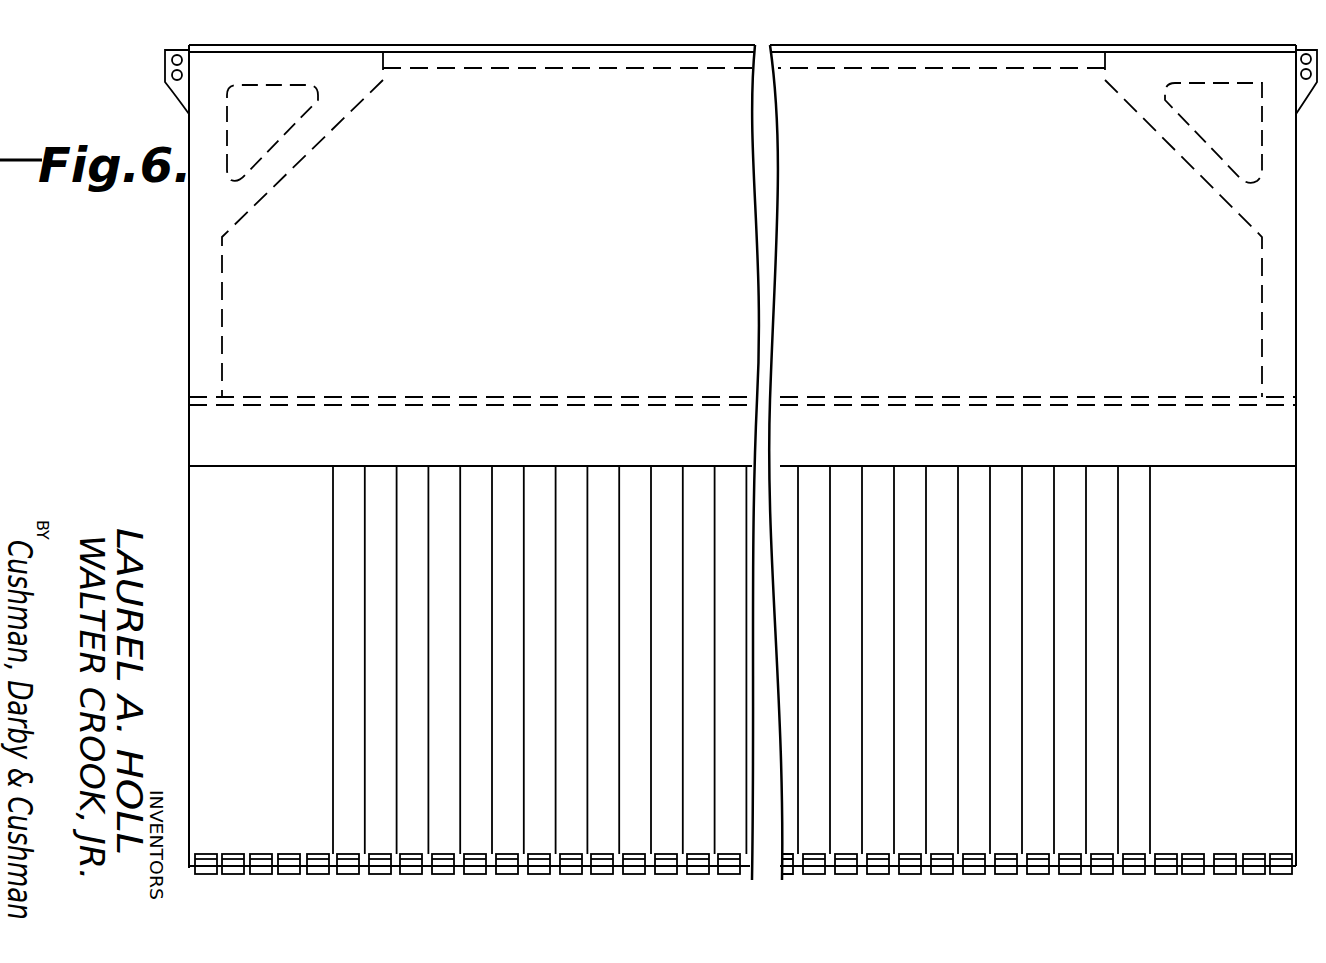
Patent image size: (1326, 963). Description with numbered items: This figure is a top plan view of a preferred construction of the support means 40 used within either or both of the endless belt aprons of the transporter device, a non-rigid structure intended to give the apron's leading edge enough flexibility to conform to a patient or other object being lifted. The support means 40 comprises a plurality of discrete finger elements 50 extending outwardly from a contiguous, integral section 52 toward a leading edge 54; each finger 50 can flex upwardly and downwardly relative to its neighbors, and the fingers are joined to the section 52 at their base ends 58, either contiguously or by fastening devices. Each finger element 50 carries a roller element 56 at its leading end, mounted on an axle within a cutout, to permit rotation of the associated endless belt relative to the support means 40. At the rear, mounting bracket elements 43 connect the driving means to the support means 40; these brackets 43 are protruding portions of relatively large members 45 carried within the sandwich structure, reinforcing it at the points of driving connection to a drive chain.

The support means 40 is at (165, 419).
The mounting bracket elements 43 is at (166, 62).
The relatively large members 45 is at (281, 180).
The finger elements 50 is at (1070, 648).
The contiguous, integral section 52 is at (1140, 356).
The leading edge 54 is at (1136, 876).
The roller element 56 is at (1066, 872).
The base ends 58 is at (1137, 470).